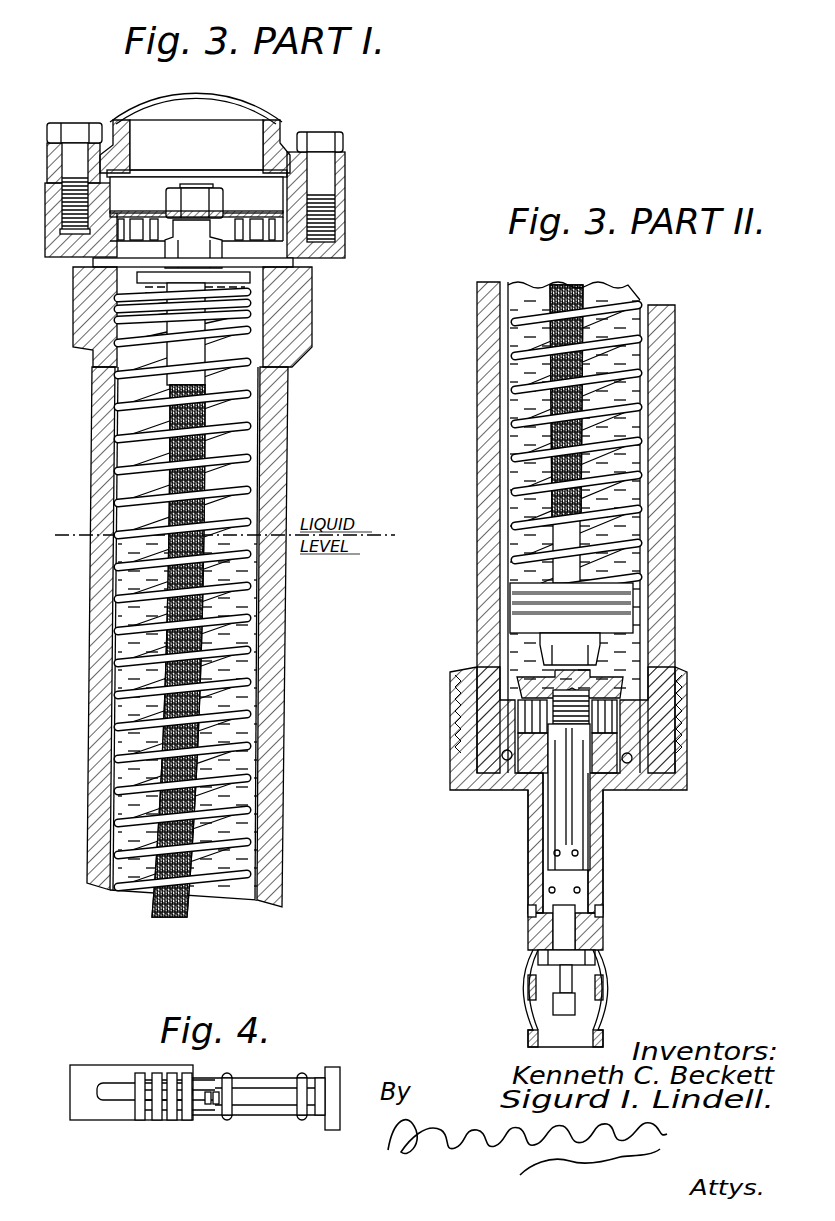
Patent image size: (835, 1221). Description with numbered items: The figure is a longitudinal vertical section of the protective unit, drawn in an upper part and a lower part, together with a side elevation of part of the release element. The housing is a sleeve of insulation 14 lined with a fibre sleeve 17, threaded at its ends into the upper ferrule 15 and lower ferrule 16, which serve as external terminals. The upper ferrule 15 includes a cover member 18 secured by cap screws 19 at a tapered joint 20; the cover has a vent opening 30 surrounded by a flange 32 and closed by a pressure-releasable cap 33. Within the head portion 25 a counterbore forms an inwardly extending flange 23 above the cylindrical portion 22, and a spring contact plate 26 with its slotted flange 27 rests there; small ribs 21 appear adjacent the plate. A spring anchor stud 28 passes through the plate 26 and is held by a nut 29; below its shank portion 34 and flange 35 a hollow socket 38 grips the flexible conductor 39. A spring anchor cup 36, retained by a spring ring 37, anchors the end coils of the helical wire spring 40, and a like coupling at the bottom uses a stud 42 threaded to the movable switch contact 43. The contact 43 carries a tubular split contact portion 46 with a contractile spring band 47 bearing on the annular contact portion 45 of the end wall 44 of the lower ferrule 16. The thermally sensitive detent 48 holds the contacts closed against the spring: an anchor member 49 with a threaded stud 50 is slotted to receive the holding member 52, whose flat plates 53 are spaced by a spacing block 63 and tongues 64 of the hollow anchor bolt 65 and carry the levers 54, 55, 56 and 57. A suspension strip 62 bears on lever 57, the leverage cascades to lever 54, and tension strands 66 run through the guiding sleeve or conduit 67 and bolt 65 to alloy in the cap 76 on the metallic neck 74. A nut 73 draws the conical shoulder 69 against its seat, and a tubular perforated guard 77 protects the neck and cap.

In FIG. 3, the sleeve of insulation 14 is at (278, 628).
In FIG. 3, the upper ferrule 15 is at (262, 296).
In FIG. 3, the lower ferrule 16 is at (452, 722).
In FIG. 3, the fibre sleeve 17 is at (265, 476).
In FIG. 3, the cover member 18 is at (345, 170).
In FIG. 3, the cap screws 19 is at (75, 126).
In FIG. 3, the tapered joint 20 is at (300, 205).
In FIG. 3, the rib 21 is at (300, 222).
In FIG. 3, the cylindrical portion 22 is at (88, 290).
In FIG. 3, the inwardly extending flange 23 is at (222, 252).
In FIG. 3, the head portion 25 is at (50, 232).
In FIG. 3, the spring contact plate 26 is at (196, 195).
In FIG. 3, the slotted flange 27 is at (290, 237).
In FIG. 3, the spring anchor stud 28 is at (197, 186).
In FIG. 3, the nut 29 is at (232, 206).
In FIG. 3, the vent opening 30 is at (148, 135).
In FIG. 3, the flange 32 is at (265, 122).
In FIG. 3, the cap 33 is at (200, 96).
In FIG. 3, the shank portion 34 is at (290, 262).
In FIG. 3, the flange 35 is at (86, 328).
In FIG. 3, the spring anchor cup 36 is at (132, 302).
In FIG. 3, the spring ring 37 is at (100, 264).
In FIG. 3, the hollow socket 38 is at (200, 337).
In FIG. 3, the flexible conductor 39 is at (282, 414).
In FIG. 3, the helical wire spring 40 is at (384, 600).
In FIG. 3, the stud 42 is at (582, 647).
In FIG. 3, the movable switch contact 43 is at (625, 702).
In FIG. 3, the end wall 44 is at (655, 792).
In FIG. 3, the contact portion 45 is at (520, 792).
In FIG. 3, the tubular split contact portion 46 is at (622, 730).
In FIG. 3, the contractile spring band 47 is at (632, 762).
In FIG. 3, the thermally sensitive detent 48 is at (605, 868).
In FIG. 3, the anchor member 49 is at (553, 788).
In FIG. 3, the threaded stud 50 is at (548, 690).
In FIG. 3, the holding member 52 is at (592, 842).
In FIG. 3, the flat plates 53 is at (555, 865).
In FIG. 4, the flat plates 53 is at (288, 1080).
In FIG. 4, the lever 54 is at (184, 1110).
In FIG. 4, the lever 55 is at (168, 1108).
In FIG. 4, the lever 56 is at (153, 1108).
In FIG. 4, the lever 57 is at (137, 1106).
In FIG. 3, the suspension strip 62 is at (562, 815).
In FIG. 4, the suspension strip 62 is at (95, 1078).
In FIG. 4, the spacing block 63 is at (212, 1110).
In FIG. 3, the tongues 64 is at (592, 893).
In FIG. 4, the tongues 64 is at (320, 1110).
In FIG. 3, the anchor stud or bolt 65 is at (578, 938).
In FIG. 4, the anchor stud or bolt 65 is at (334, 1074).
In FIG. 4, the tension strands 66 is at (200, 1092).
In FIG. 4, the guiding sleeve or conduit 67 is at (218, 1110).
In FIG. 3, the conical shoulder 69 is at (530, 922).
In FIG. 3, the nut 73 is at (540, 959).
In FIG. 3, the metallic neck 74 is at (574, 984).
In FIG. 3, the cap 76 is at (553, 1006).
In FIG. 3, the tubular perforated guard 77 is at (528, 1032).